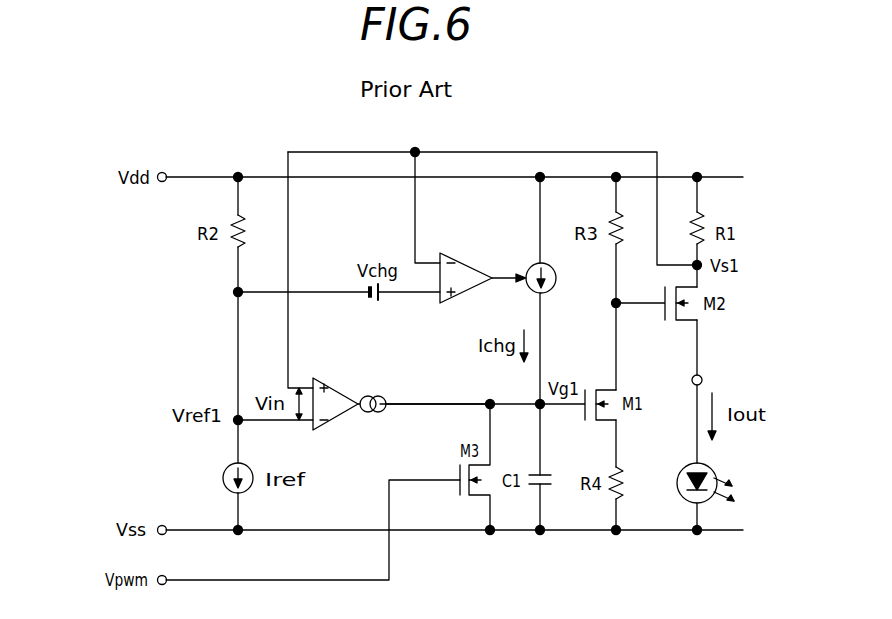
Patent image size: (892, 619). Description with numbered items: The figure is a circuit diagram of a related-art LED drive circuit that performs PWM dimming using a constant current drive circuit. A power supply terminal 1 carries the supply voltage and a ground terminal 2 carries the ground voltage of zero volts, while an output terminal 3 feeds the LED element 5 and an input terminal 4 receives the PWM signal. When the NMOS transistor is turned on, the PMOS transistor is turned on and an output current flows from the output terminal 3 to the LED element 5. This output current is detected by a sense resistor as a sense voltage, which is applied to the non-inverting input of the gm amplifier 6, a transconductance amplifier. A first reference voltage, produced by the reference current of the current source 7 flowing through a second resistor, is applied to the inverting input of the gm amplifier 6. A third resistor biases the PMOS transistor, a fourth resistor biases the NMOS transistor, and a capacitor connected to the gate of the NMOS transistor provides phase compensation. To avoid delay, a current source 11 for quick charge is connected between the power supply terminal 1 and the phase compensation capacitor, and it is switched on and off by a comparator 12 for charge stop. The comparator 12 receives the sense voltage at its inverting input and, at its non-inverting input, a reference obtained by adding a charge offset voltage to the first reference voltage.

The power supply terminal 1 is at (165, 173).
The ground terminal 2 is at (165, 526).
The output terminal 3 is at (702, 378).
The input terminal of a PWM signal 4 is at (165, 576).
The LED element 5 is at (708, 463).
The gm amplifier 6 is at (338, 381).
The current source 7 is at (222, 480).
The current source for quick charge 11 is at (526, 265).
The comparator for charge stop 12 is at (465, 266).